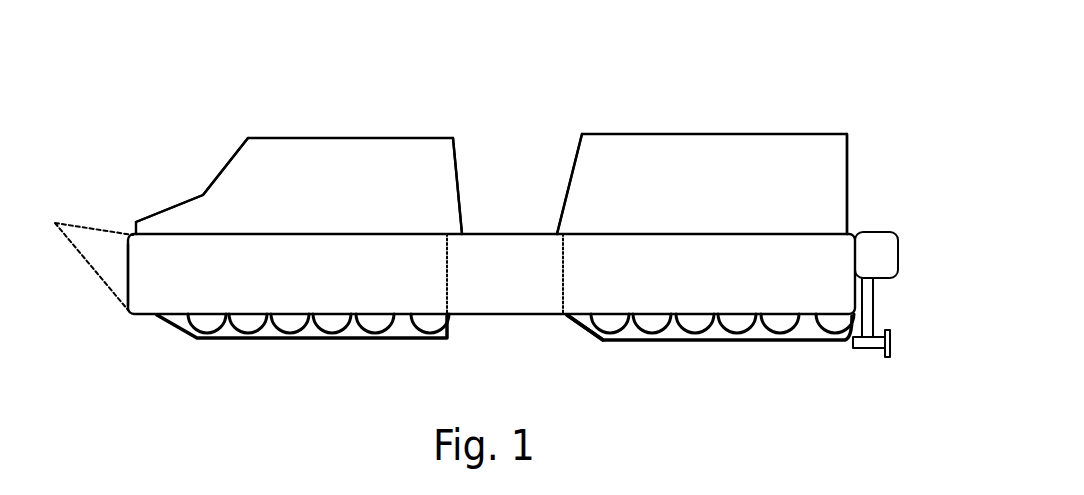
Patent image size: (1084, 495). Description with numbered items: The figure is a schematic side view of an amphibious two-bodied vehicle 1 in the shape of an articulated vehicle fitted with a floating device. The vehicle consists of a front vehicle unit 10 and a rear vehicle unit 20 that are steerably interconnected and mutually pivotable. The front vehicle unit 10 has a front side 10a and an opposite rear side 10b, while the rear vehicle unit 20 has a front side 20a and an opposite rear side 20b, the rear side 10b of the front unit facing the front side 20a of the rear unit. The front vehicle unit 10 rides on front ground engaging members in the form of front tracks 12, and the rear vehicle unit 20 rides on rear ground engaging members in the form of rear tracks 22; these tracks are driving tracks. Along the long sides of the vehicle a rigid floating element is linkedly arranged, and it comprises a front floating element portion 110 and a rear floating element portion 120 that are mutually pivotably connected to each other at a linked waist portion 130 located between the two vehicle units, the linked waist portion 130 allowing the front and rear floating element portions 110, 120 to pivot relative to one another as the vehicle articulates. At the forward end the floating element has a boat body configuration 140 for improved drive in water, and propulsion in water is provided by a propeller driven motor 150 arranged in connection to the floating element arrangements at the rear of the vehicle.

The amphibious two-bodied vehicle 1 is at (699, 30).
The front vehicle unit 10 is at (347, 134).
The front side of the front vehicle unit 10a is at (218, 175).
The rear side of the front vehicle unit 10b is at (460, 192).
The front tracks 12 is at (307, 342).
The rear vehicle unit 20 is at (665, 131).
The front side of the rear vehicle unit 20a is at (575, 158).
The rear side of the rear vehicle unit 20b is at (847, 180).
The rear tracks 22 is at (744, 345).
The front floating element portion 110 is at (151, 318).
The rear floating element portion 120 is at (577, 325).
The linked waist portion 130 is at (522, 297).
The boat body configuration 140 is at (103, 230).
The propeller driven motor 150 is at (877, 282).